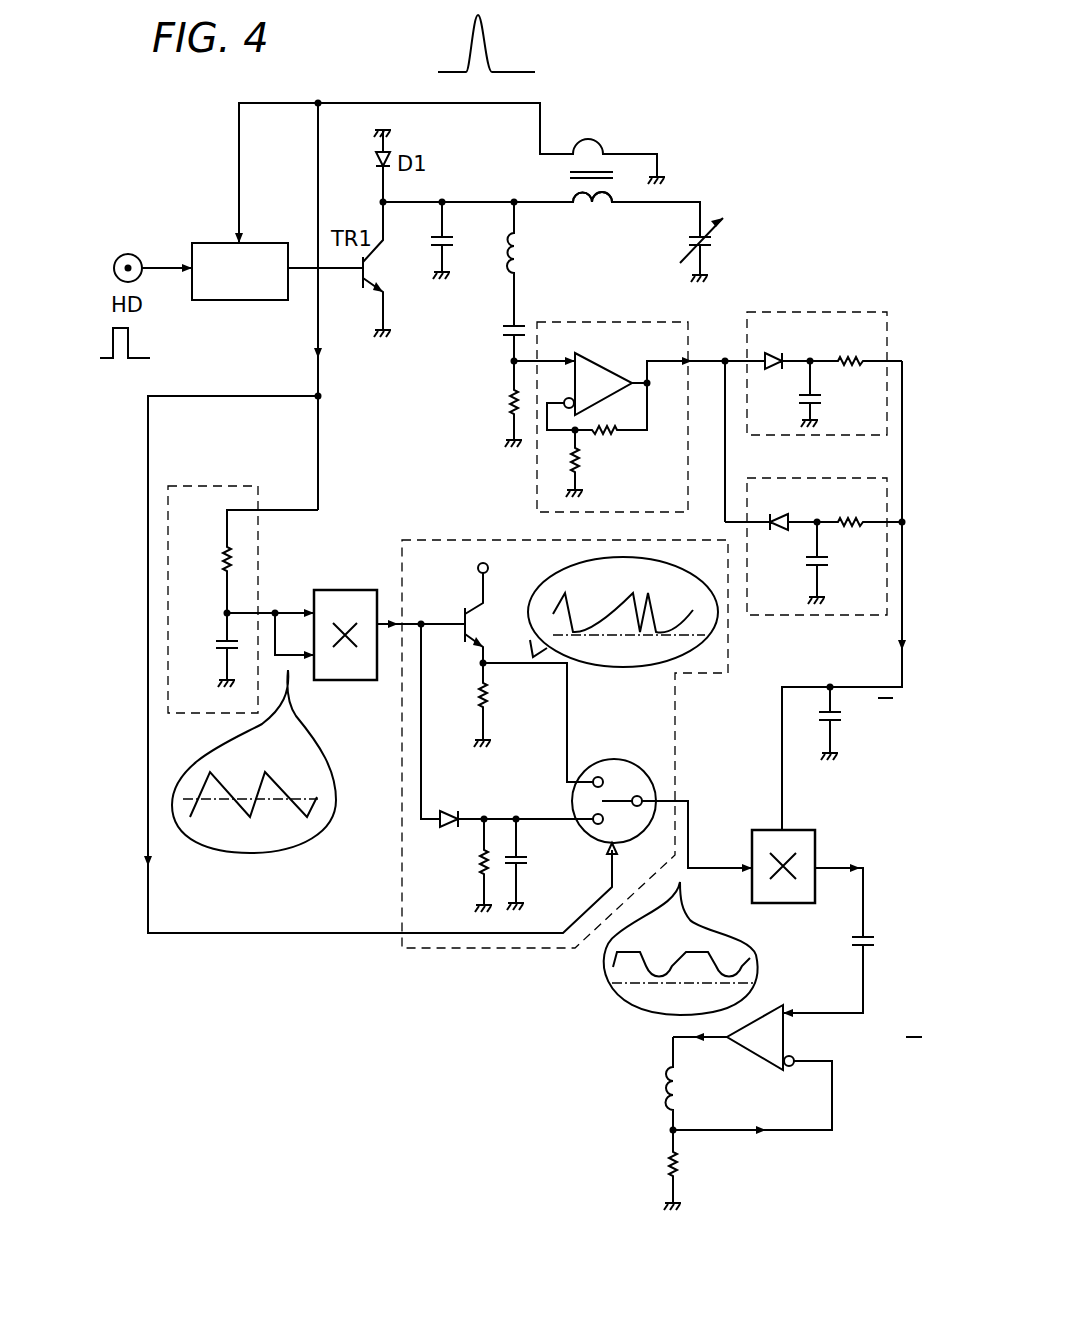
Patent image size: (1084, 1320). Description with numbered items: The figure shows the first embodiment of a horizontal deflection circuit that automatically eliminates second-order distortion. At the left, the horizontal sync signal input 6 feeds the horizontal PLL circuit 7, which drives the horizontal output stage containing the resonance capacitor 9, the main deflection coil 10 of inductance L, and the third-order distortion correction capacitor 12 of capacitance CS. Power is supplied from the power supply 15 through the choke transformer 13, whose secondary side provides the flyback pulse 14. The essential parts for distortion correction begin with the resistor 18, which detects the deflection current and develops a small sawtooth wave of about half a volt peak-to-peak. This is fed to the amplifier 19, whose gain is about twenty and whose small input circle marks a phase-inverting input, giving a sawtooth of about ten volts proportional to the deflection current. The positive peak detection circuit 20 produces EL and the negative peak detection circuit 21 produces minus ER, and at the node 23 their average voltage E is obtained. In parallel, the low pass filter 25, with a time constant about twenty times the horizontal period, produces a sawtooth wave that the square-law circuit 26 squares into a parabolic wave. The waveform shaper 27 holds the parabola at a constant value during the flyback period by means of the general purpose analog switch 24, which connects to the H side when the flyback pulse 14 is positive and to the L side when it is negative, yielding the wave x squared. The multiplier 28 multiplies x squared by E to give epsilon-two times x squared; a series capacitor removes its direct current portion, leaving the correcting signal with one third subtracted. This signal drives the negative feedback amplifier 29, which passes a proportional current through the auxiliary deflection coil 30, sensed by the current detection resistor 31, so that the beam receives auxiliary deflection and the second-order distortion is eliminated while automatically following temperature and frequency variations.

The horizontal sync signal input 6 is at (130, 254).
The horizontal PLL circuit 7 is at (276, 243).
The resonance capacitor 9 is at (423, 256).
The main deflection coil 10 is at (504, 264).
The third-order distortion correction capacitor 12 is at (497, 333).
The choke transformer for power supply 13 is at (596, 215).
The flyback pulse 14 is at (239, 150).
The power supply 15 is at (716, 238).
The resistor for detecting the deflection current 18 is at (502, 398).
The amplifier 19 is at (645, 322).
The positive peak detection circuit 20 is at (857, 312).
The negative peak detection circuit 21 is at (848, 478).
The node 23 is at (910, 556).
The general purpose analog switch 24 is at (633, 759).
The low pass filter 25 is at (245, 486).
The square-law circuit 26 is at (366, 590).
The waveform shaper 27 is at (548, 744).
The multiplier 28 is at (805, 830).
The negative feedback amplifier 29 is at (787, 1005).
The auxiliary deflection coil 30 is at (662, 1089).
The current detection resistor 31 is at (662, 1164).